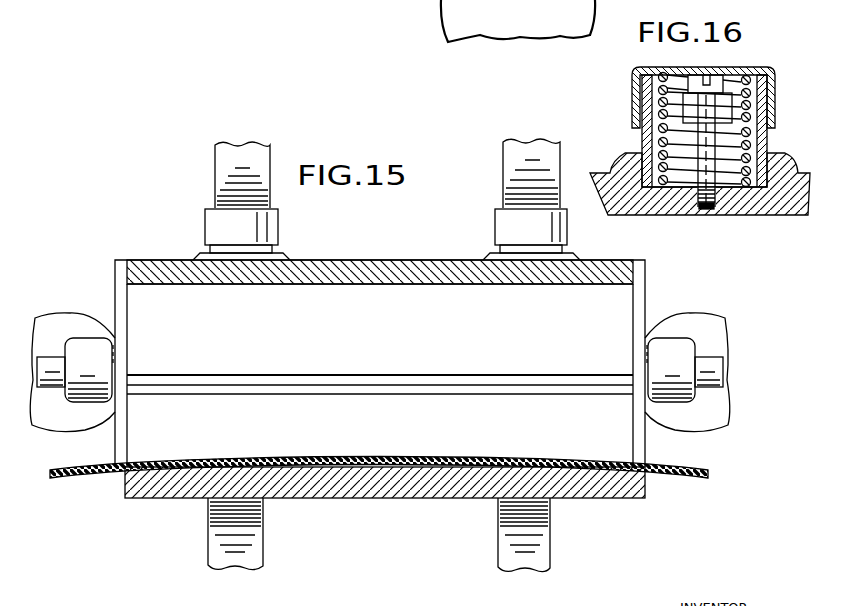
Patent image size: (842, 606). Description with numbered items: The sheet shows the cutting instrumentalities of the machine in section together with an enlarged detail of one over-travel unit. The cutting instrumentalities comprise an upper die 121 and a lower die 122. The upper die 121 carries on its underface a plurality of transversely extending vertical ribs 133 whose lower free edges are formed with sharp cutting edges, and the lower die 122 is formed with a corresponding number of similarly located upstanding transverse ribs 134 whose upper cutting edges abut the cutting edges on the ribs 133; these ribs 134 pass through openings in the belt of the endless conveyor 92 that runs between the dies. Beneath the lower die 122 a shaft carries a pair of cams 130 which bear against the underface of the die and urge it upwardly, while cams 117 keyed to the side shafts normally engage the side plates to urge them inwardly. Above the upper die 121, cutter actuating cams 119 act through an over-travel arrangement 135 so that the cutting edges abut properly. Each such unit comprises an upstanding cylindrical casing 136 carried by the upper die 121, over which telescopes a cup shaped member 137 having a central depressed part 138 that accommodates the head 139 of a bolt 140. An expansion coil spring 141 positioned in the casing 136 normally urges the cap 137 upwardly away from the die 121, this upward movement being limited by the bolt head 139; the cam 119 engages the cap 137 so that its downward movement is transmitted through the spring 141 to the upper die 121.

In FIG. 15, the endless conveyor 92 is at (52, 478).
In FIG. 15, the cam 117 is at (84, 302).
In FIG. 15, the cutter actuating cam 119 is at (268, 150).
In FIG. 15, the upper die 121 is at (394, 259).
In FIG. 16, the upper die 121 is at (657, 213).
In FIG. 15, the lower die 122 is at (158, 497).
In FIG. 15, the cam 130 is at (262, 548).
In FIG. 15, the vertical rib 133 is at (385, 331).
In FIG. 15, the transverse rib 134 is at (378, 429).
In FIG. 15, the over-travel arrangement 135 is at (279, 224).
In FIG. 16, the over-travel arrangement 135 is at (758, 64).
In FIG. 16, the cylindrical casing 136 is at (770, 137).
In FIG. 16, the cup shaped member 137 is at (633, 90).
In FIG. 16, the central depressed part 138 is at (701, 76).
In FIG. 16, the bolt head 139 is at (714, 82).
In FIG. 16, the bolt 140 is at (705, 212).
In FIG. 16, the expansion coil spring 141 is at (660, 140).